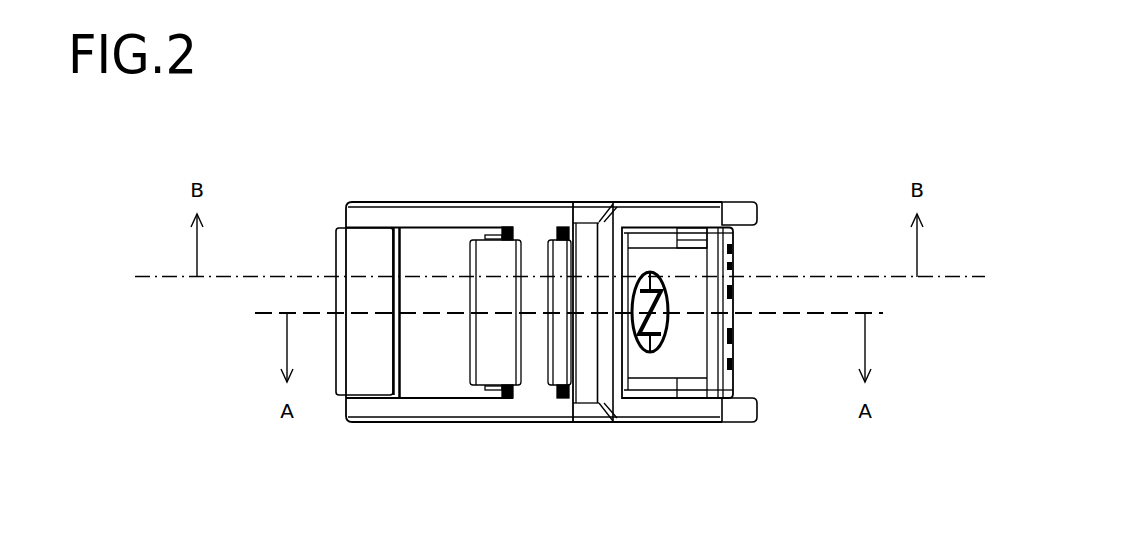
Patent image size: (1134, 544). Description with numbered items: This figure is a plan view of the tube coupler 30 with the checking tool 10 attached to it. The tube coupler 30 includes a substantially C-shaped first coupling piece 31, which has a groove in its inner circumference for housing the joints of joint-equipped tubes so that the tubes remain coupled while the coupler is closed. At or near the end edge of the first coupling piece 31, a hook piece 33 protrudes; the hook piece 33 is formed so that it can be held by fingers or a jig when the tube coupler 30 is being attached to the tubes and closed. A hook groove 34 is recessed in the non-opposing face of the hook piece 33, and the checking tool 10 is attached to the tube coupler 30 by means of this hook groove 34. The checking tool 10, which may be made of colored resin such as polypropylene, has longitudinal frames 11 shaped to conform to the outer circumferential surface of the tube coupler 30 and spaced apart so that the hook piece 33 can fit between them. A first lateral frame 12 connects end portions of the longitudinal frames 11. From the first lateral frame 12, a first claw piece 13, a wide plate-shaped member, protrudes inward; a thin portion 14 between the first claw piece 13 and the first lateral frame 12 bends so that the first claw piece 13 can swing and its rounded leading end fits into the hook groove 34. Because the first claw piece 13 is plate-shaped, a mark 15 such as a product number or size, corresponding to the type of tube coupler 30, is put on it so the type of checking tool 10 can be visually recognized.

The checking tool 10 is at (706, 321).
The longitudinal frame 11 is at (678, 204).
The first lateral frame 12 is at (585, 375).
The first claw piece 13 is at (657, 368).
The thin portion 14 is at (630, 367).
The mark 15 is at (688, 345).
The tube coupler 30 is at (413, 190).
The first coupling piece 31 is at (495, 413).
The hook piece 33 is at (728, 243).
The hook groove 34 is at (703, 240).